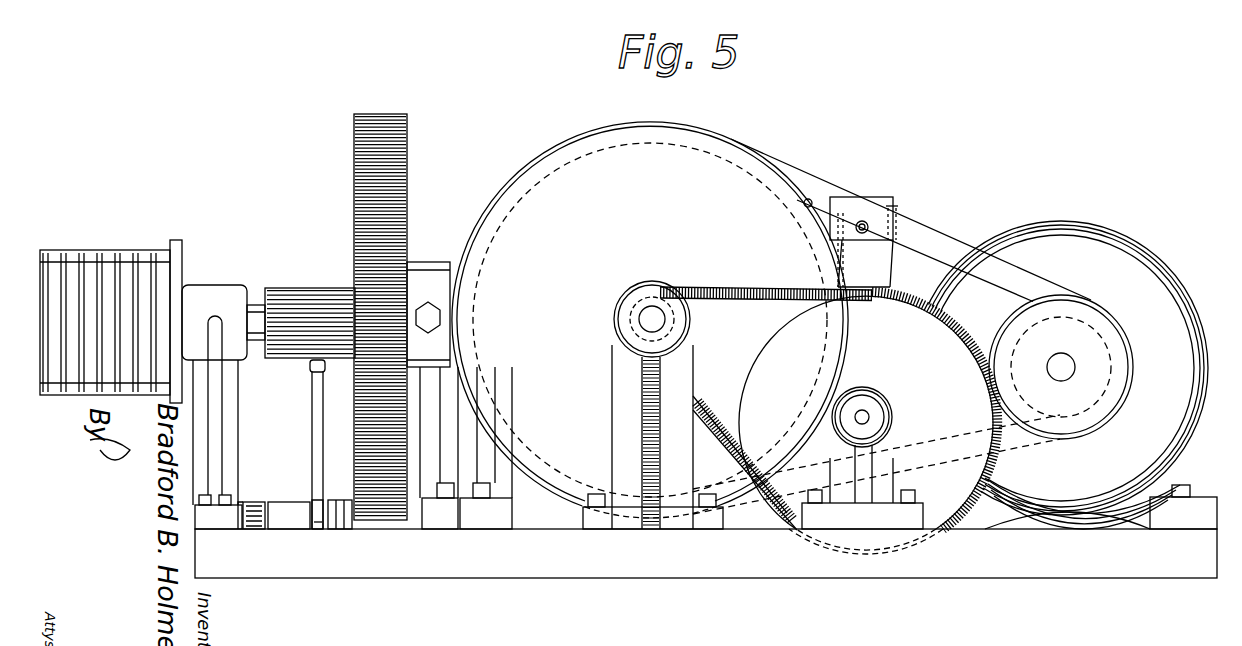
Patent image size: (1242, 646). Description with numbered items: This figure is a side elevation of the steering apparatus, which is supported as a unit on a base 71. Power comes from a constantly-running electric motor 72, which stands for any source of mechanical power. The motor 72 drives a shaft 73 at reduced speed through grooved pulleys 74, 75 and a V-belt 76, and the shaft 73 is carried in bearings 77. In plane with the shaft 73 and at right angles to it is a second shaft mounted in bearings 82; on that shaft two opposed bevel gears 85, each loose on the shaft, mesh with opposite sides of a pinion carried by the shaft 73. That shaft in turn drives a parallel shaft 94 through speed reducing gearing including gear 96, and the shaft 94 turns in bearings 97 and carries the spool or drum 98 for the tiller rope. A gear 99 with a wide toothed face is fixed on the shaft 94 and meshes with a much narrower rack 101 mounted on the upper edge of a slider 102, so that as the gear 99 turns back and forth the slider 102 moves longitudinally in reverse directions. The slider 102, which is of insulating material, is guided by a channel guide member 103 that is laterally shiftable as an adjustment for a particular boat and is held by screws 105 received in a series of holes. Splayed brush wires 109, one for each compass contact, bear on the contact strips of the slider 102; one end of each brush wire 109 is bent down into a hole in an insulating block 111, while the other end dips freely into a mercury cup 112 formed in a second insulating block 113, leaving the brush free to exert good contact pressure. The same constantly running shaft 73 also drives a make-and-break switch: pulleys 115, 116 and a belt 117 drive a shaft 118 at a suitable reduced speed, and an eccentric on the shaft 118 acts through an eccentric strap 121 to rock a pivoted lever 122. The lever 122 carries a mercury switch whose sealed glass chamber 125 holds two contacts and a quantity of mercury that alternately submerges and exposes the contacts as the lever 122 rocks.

The base 71 is at (948, 564).
The electric motor 72 is at (1178, 418).
The shaft 73 is at (642, 313).
The grooved pulley 74 is at (1092, 332).
The grooved pulley 75 is at (641, 151).
The V-belt 76 is at (932, 238).
The bearing 77 is at (627, 402).
The bearing 82 is at (450, 530).
The bevel gear 85 is at (530, 160).
The shaft 94 is at (257, 305).
The speed reducing gear 96 is at (354, 186).
The bearing 97 is at (215, 288).
The spool or drum 98 is at (105, 250).
The gear 99 is at (308, 288).
The rack 101 is at (308, 366).
The slider 102 is at (317, 420).
The channel guide member 103 is at (311, 500).
The screw 105 is at (324, 533).
The brush wire 109 is at (283, 500).
The insulating block 111 is at (345, 500).
The mercury cup 112 is at (291, 517).
The insulating block 113 is at (258, 535).
The pulley 115 is at (692, 324).
The pulley 116 is at (749, 372).
The belt 117 is at (938, 323).
The shaft 118 is at (862, 411).
The eccentric strap 121 is at (868, 268).
The lever 122 is at (897, 208).
The sealed glass chamber 125 is at (812, 200).